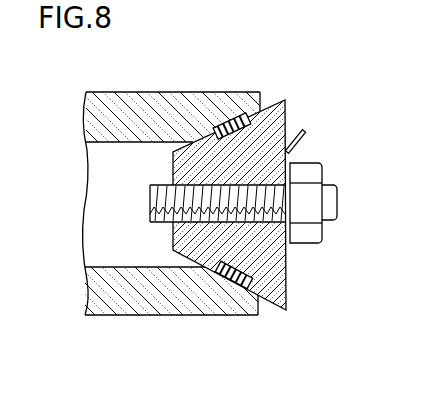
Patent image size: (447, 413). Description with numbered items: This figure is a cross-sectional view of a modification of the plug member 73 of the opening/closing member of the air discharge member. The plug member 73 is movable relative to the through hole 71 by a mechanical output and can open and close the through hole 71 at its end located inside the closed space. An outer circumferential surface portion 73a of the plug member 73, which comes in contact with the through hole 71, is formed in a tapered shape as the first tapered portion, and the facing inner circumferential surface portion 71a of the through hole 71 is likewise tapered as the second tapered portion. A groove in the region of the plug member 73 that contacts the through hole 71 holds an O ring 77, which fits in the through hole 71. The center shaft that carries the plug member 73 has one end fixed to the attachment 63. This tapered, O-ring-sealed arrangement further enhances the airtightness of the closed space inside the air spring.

The through hole 71 is at (157, 103).
The inner circumferential surface portion 71a is at (284, 103).
The plug member 73 is at (263, 273).
The outer circumferential surface portion 73a is at (228, 114).
The attachment 63 is at (306, 237).
The O ring 77 is at (228, 286).